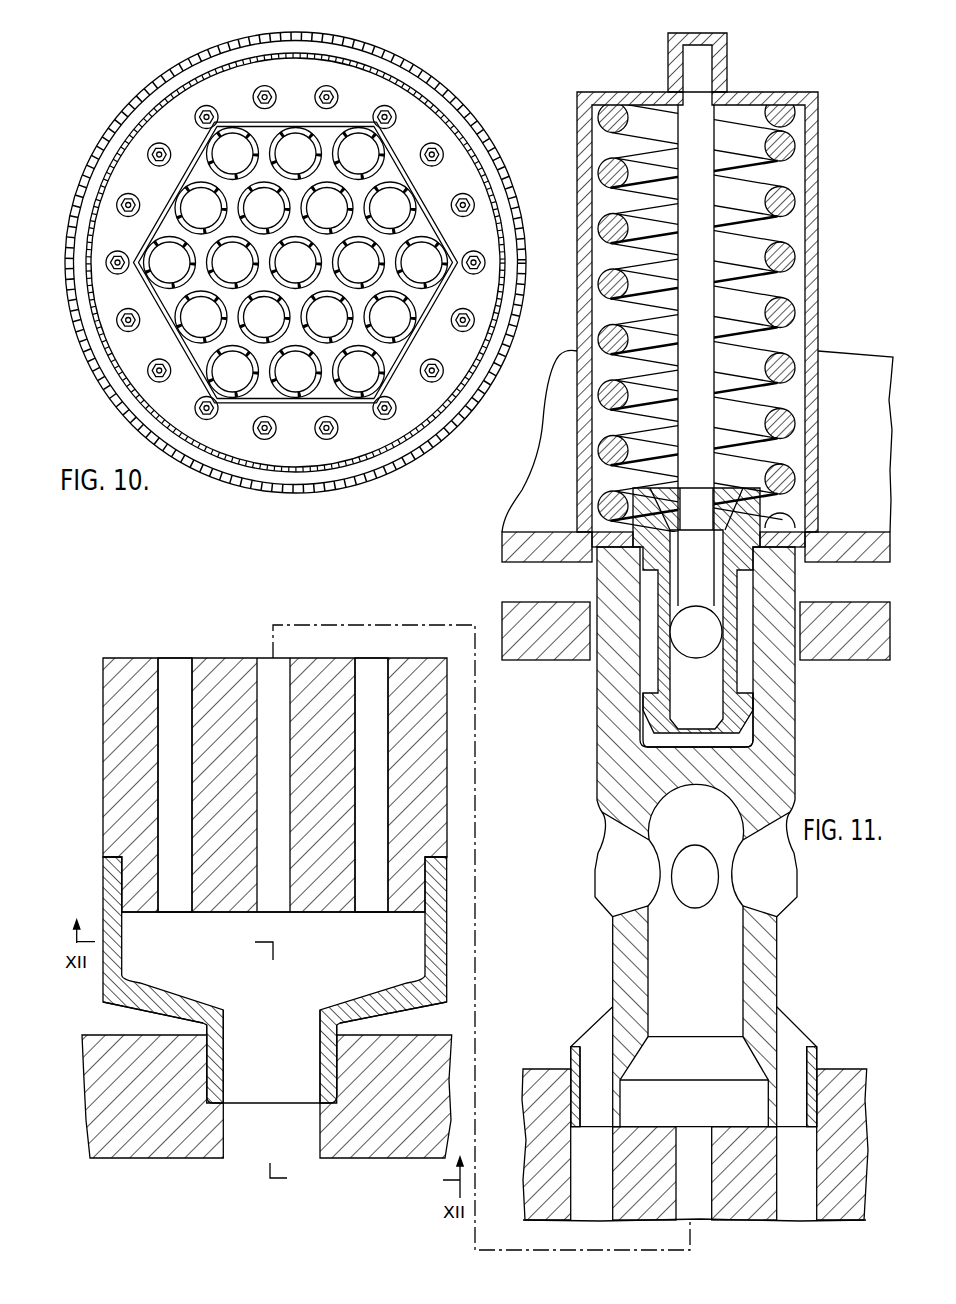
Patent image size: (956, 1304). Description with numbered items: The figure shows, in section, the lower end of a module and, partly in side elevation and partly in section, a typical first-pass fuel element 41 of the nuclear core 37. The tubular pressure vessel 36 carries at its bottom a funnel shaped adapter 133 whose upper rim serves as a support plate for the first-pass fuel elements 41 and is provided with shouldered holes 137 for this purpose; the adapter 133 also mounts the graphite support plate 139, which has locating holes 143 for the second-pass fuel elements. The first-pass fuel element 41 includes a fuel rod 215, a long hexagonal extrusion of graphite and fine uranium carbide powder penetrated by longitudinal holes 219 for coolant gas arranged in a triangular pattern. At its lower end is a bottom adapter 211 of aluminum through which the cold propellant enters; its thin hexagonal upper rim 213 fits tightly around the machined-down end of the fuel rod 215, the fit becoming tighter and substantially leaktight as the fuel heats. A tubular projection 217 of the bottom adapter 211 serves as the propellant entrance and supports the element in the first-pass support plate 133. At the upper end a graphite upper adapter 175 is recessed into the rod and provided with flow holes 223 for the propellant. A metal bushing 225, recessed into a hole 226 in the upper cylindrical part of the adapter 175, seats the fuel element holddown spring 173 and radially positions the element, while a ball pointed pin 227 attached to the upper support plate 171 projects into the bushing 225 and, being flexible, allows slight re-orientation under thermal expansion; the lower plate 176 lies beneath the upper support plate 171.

In FIG. 10, the pressure vessel 36 is at (125, 116).
In FIG. 10, the funnel shaped adapter 133 is at (418, 122).
In FIG. 11, the funnel shaped adapter 133 is at (100, 1092).
In FIG. 10, the nuclear core 37 is at (383, 176).
In FIG. 10, the locating holes 143 is at (237, 131).
In FIG. 10, the support plate 139 is at (332, 133).
In FIG. 10, the shouldered holes 137 is at (465, 201).
In FIG. 11, the shouldered holes 137 is at (335, 1068).
In FIG. 11, the fuel element holddown spring 173 is at (783, 191).
In FIG. 11, the upper support plate 171 is at (521, 542).
In FIG. 11, the lower plate 176 is at (515, 608).
In FIG. 11, the upper adapter 175 is at (768, 966).
In FIG. 11, the metal bushing 225 is at (747, 712).
In FIG. 11, the hole 226 is at (740, 739).
In FIG. 11, the ball pointed pin 227 is at (707, 647).
In FIG. 11, the flow holes 223 is at (790, 1042).
In FIG. 11, the first-pass fuel element 41 is at (94, 751).
In FIG. 11, the fuel rod 215 is at (178, 672).
In FIG. 11, the longitudinal holes 219 is at (375, 672).
In FIG. 11, the thin hexagonal upper rim 213 is at (110, 928).
In FIG. 11, the bottom adapter 211 is at (112, 996).
In FIG. 11, the tubular projection 217 is at (203, 1025).